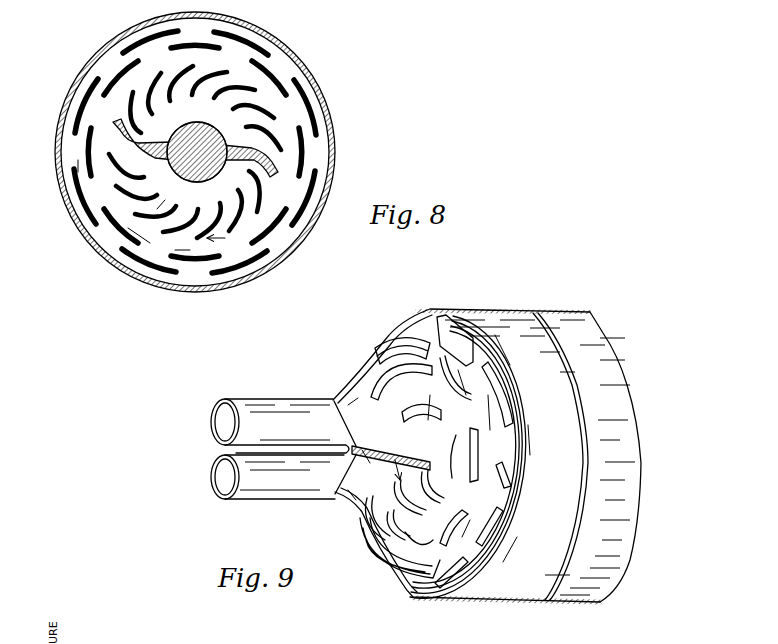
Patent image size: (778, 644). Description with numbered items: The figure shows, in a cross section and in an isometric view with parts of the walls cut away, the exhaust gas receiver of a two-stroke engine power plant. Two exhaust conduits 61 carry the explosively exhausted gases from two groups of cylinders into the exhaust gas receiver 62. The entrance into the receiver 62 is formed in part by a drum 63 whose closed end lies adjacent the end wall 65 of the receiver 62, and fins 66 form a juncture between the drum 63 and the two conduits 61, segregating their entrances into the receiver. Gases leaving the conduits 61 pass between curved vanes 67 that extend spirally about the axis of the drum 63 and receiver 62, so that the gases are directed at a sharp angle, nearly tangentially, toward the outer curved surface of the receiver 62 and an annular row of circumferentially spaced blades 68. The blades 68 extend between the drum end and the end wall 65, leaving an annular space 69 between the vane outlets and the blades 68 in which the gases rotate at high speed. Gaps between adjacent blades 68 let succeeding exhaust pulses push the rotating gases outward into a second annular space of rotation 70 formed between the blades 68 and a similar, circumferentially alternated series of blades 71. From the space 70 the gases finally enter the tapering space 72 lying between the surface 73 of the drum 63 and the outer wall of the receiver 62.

In FIG. 9, the exhaust conduit 61 is at (222, 433).
In FIG. 8, the exhaust gas receiver 62 is at (86, 60).
In FIG. 9, the exhaust gas receiver 62 is at (638, 442).
In FIG. 9, the drum 63 is at (521, 469).
In FIG. 9, the end wall 65 is at (395, 350).
In FIG. 8, the fins 66 is at (126, 143).
In FIG. 9, the fins 66 is at (352, 469).
In FIG. 8, the curved vanes 67 is at (232, 93).
In FIG. 9, the curved vanes 67 is at (406, 423).
In FIG. 8, the blades 68 is at (118, 232).
In FIG. 9, the blades 68 is at (470, 512).
In FIG. 8, the annular space 69 is at (228, 255).
In FIG. 9, the annular space 69 is at (475, 501).
In FIG. 8, the second annular space of rotation 70 is at (76, 147).
In FIG. 8, the blades 71 is at (300, 91).
In FIG. 9, the blades 71 is at (497, 397).
In FIG. 8, the tapering space 72 is at (252, 36).
In FIG. 9, the tapering space 72 is at (462, 590).
In FIG. 9, the surface 73 is at (512, 515).